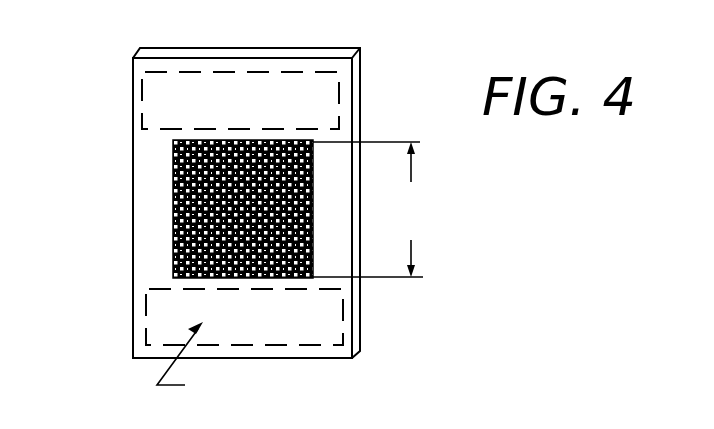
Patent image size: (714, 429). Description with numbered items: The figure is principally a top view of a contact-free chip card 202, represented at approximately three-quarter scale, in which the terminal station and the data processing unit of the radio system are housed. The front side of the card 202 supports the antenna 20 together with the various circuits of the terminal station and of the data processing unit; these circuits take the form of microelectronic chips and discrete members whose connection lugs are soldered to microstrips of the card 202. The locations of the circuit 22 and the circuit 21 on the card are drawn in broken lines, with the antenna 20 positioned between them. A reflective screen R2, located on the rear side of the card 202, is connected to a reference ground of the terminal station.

The contact-free chip card 202 is at (93, 67).
The reflective screen R2 is at (258, 47).
The circuit 22 is at (338, 86).
The antenna 20 is at (173, 203).
The circuit 21 is at (341, 333).